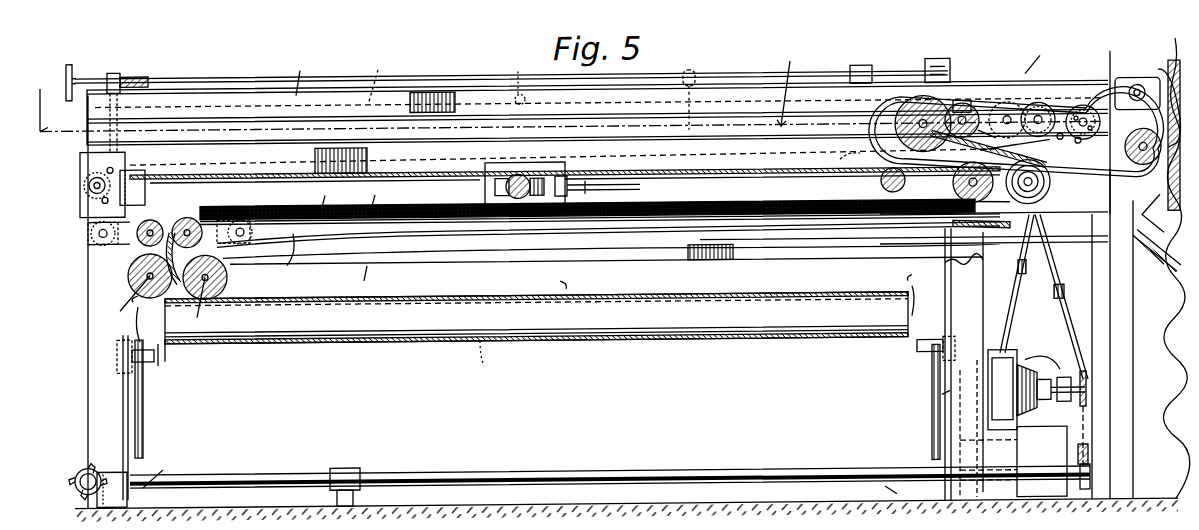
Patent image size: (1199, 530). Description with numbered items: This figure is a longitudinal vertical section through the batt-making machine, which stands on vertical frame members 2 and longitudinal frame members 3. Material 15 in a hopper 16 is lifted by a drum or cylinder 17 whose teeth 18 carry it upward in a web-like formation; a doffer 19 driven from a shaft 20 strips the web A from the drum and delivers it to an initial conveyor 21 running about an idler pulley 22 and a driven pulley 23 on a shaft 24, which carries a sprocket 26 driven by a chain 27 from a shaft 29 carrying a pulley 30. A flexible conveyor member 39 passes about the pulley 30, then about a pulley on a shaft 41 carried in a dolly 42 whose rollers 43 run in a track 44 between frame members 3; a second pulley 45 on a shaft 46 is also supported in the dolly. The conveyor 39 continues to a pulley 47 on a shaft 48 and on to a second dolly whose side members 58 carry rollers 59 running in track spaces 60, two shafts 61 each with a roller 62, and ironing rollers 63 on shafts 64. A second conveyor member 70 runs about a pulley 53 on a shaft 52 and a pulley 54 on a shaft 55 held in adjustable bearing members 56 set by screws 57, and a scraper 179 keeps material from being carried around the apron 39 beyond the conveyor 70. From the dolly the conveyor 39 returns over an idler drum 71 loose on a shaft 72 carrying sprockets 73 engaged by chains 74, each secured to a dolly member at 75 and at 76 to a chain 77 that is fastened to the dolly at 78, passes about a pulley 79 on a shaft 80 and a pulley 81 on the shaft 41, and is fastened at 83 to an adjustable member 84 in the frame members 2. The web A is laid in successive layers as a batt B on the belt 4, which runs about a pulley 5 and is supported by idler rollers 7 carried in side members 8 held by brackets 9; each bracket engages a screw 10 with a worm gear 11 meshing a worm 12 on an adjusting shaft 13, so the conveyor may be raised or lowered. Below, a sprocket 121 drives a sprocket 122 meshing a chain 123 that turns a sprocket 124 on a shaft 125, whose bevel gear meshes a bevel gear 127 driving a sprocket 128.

The vertical frame members 2 is at (88, 310).
The longitudinal frame members 3 is at (521, 274).
The belt or conveyor 4 is at (250, 348).
The roller or pulley 5 is at (323, 361).
The idler rollers 7 is at (569, 83).
The side members 8 is at (521, 307).
The brackets 9 is at (117, 352).
The screw 10 is at (135, 72).
The worm gear 11 is at (153, 76).
The worm 12 is at (68, 64).
The control or adjusting shaft 13 is at (226, 77).
The material 15 is at (1154, 267).
The hopper 16 is at (1164, 282).
The drum or cylinder 17 is at (1168, 181).
The projections or teeth 18 is at (1168, 201).
The doffer 19 is at (1162, 87).
The shaft 20 is at (1130, 89).
The initial conveyor 21 is at (1120, 191).
The idler pulley 22 is at (1138, 157).
The driven pulley 23 is at (1090, 136).
The shaft 24 is at (1083, 113).
The sprocket 26 is at (1079, 152).
The chain 27 is at (1076, 123).
The shaft 29 is at (1060, 147).
The pulley 30 is at (1040, 109).
The flexible conveyor member 39 is at (434, 253).
The shaft 41 is at (904, 94).
The dolly 42 is at (895, 102).
The rollers 43 is at (1008, 108).
The channel groove or track 44 is at (790, 85).
The second pulley 45 is at (970, 116).
The shaft 46 is at (962, 106).
The pulley 47 is at (953, 187).
The shaft 48 is at (981, 227).
The shaft 52 is at (880, 192).
The pulley 53 is at (897, 222).
The pulley 54 is at (529, 173).
The shaft 55 is at (495, 189).
The adjustable bearing members 56 is at (554, 179).
The screws 57 is at (603, 183).
The dolly side members 58 is at (128, 238).
The rollers 59 is at (80, 237).
The track spaces 60 is at (301, 255).
The shafts 61 is at (155, 227).
The pulley or roller 62 is at (190, 223).
The ironing rollers 63 is at (151, 276).
The shafts 64 is at (161, 302).
The second conveyor member 70 is at (698, 187).
The roller or drum 71 is at (1050, 229).
The shaft 72 is at (1050, 191).
The sprocket 73 is at (1026, 227).
The chains 74 is at (283, 178).
The securing point 75 is at (250, 177).
The securing point 76 is at (837, 159).
The chain 77 is at (691, 91).
The securing point 78 is at (136, 205).
The sprocket or pulley 79 is at (80, 185).
The shaft 80 is at (80, 194).
The sprocket or pulley 81 is at (852, 74).
The fastening point 83 is at (514, 79).
The adjustable member 84 is at (377, 80).
The sprocket 121 is at (940, 418).
The sprocket 122 is at (1090, 389).
The chain 123 is at (1088, 427).
The sprocket 124 is at (1090, 469).
The shaft 125 is at (738, 476).
The bevel gear 127 is at (72, 481).
The sprocket 128 is at (72, 463).
The scraper 179 is at (988, 148).
The web A is at (1041, 52).
The batt B is at (553, 277).